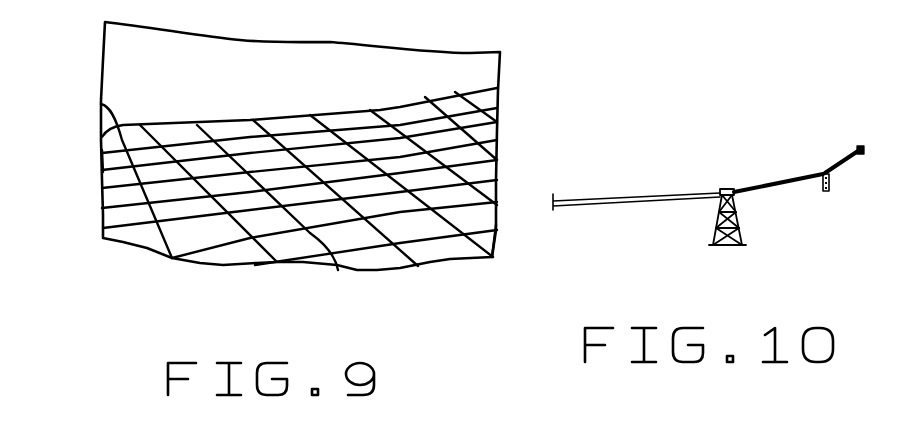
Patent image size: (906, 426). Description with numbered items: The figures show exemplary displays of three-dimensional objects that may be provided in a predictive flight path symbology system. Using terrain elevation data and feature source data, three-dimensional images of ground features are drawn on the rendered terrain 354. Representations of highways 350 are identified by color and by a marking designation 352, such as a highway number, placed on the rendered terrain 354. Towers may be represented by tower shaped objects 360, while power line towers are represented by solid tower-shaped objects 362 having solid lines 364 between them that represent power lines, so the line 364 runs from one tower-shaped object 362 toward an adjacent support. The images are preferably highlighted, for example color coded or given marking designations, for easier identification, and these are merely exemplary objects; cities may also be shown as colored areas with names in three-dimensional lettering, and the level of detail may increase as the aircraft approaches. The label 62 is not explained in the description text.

In FIG. 9, the tower shaped object 360 is at (330, 42).
In FIG. 9, the solid line 364 is at (100, 105).
In FIG. 10, the solid line 364 is at (628, 195).
In FIG. 9, the weave line 62 is at (103, 160).
In FIG. 9, the marking designation 352 is at (338, 272).
In FIG. 9, the highway 350 is at (430, 260).
In FIG. 9, the rendered terrain 354 is at (497, 238).
In FIG. 10, the rendered terrain 354 is at (832, 183).
In FIG. 10, the solid tower-shaped object 362 is at (743, 235).